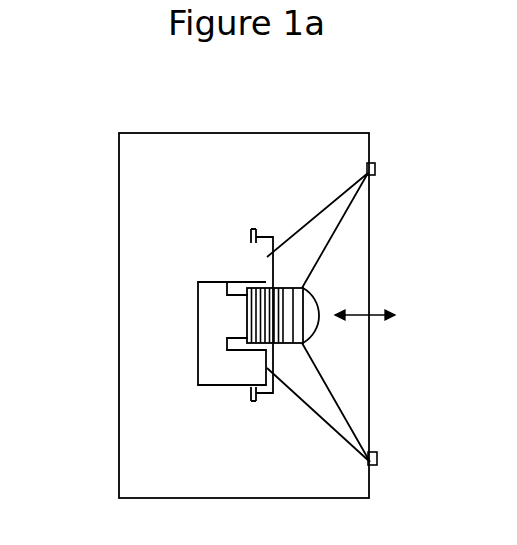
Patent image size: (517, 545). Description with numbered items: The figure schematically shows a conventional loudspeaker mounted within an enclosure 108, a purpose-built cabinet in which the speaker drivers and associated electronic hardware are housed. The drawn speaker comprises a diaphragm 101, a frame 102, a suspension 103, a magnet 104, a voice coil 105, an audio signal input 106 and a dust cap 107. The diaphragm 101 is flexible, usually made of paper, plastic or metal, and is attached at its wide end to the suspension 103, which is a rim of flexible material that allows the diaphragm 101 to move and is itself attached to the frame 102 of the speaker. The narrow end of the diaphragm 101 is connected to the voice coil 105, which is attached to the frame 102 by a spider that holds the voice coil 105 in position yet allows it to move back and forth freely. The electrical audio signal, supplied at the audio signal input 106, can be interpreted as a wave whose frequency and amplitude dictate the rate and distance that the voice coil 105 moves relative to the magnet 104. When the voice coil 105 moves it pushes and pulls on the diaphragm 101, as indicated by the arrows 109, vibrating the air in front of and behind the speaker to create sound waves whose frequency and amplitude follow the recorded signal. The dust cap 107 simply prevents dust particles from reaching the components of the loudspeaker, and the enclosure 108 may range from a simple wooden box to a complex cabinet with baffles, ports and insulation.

The diaphragm 101 is at (348, 212).
The frame 102 is at (376, 453).
The suspension 103 is at (374, 167).
The magnet 104 is at (212, 330).
The voice coil 105 is at (256, 308).
The audio signal input 106 is at (249, 236).
The dust cap 107 is at (308, 297).
The enclosure 108 is at (150, 433).
The arrows 109 is at (390, 313).